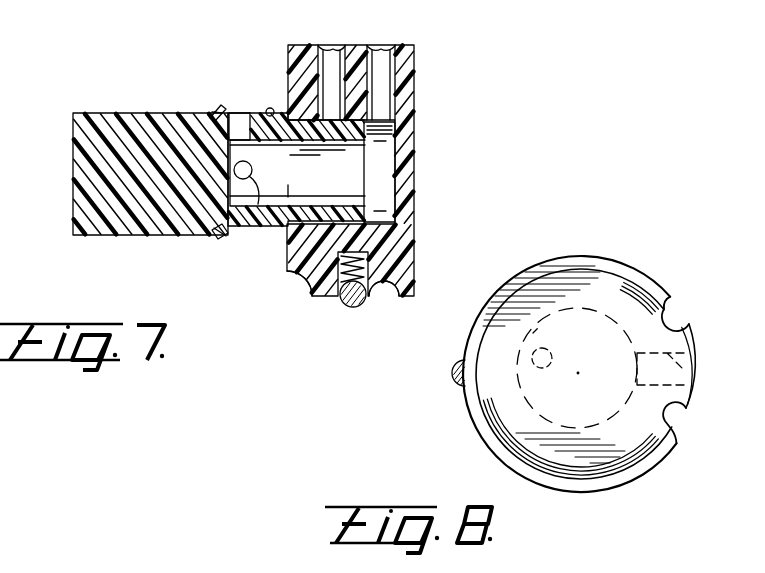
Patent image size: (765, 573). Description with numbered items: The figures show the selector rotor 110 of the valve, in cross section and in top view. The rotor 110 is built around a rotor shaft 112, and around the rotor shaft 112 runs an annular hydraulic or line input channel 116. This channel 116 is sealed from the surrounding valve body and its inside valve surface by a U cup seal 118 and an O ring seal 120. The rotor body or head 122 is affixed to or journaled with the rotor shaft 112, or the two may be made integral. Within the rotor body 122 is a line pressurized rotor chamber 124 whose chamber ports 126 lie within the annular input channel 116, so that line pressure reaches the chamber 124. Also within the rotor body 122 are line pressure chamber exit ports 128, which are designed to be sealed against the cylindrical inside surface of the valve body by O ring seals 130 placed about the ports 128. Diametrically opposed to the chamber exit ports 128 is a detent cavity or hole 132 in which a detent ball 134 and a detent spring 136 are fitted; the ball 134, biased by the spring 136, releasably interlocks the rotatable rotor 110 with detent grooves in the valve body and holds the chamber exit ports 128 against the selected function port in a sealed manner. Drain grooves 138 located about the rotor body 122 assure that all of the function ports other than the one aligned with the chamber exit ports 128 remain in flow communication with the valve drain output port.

In FIG. 7, the rotor 110 is at (203, 62).
In FIG. 8, the rotor 110 is at (577, 244).
In FIG. 7, the rotor shaft 112 is at (132, 120).
In FIG. 7, the annular hydraulic or line input channel 116 is at (242, 110).
In FIG. 7, the U cup seal 118 is at (217, 104).
In FIG. 7, the O ring seal 120 is at (271, 108).
In FIG. 7, the rotor body or head 122 is at (416, 83).
In FIG. 8, the rotor body or head 122 is at (517, 425).
In FIG. 7, the line pressurized rotor chamber 124 is at (278, 228).
In FIG. 8, the line pressurized rotor chamber 124 is at (510, 289).
In FIG. 7, the chamber ports 126 is at (240, 232).
In FIG. 7, the line pressure chamber exit ports 128 is at (375, 46).
In FIG. 8, the line pressure chamber exit ports 128 is at (703, 356).
In FIG. 7, the O ring seals 130 is at (314, 45).
In FIG. 7, the detent cavity or hole 132 is at (322, 298).
In FIG. 7, the detent ball 134 is at (366, 305).
In FIG. 8, the detent ball 134 is at (455, 376).
In FIG. 7, the detent spring 136 is at (390, 291).
In FIG. 7, the drain grooves 138 is at (300, 287).
In FIG. 8, the drain grooves 138 is at (668, 305).